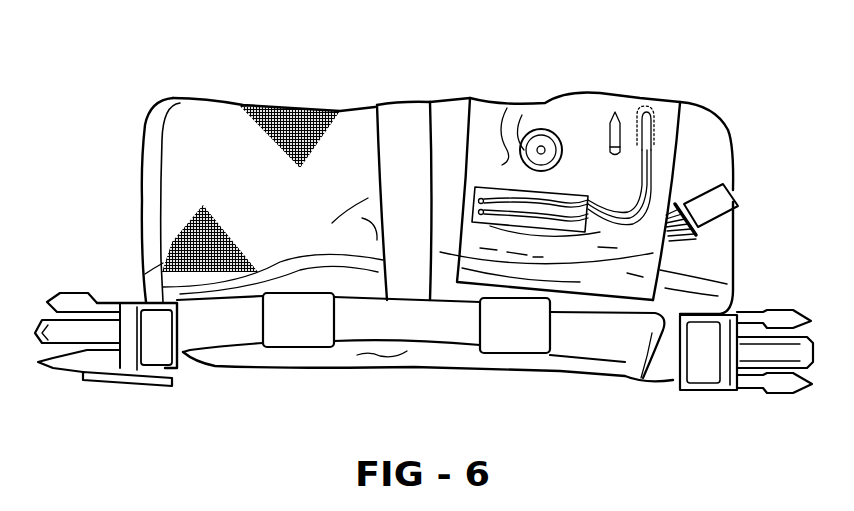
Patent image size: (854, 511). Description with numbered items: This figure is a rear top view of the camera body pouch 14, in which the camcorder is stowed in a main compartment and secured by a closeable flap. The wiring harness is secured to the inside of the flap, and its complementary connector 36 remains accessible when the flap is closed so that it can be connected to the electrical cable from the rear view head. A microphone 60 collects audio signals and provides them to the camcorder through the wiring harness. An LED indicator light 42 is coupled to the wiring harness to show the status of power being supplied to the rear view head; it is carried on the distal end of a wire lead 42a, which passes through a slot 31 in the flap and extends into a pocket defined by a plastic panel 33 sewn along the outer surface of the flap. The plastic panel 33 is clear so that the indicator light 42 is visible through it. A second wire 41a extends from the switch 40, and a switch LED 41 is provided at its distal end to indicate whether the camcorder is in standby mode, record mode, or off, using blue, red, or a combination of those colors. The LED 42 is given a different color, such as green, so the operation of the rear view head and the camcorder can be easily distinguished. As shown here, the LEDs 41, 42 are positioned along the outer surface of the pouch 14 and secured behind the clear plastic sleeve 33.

The pouch 14 is at (124, 113).
The plastic panel 33 is at (512, 190).
The switch 40 is at (540, 140).
The LED indicator light 42 is at (477, 195).
The wire lead 42a is at (610, 210).
The switch LED 41 is at (675, 255).
The second wire 41a is at (606, 216).
The complementary connector 36 is at (736, 198).
The microphone 60 is at (622, 130).
The slot 31 is at (650, 112).